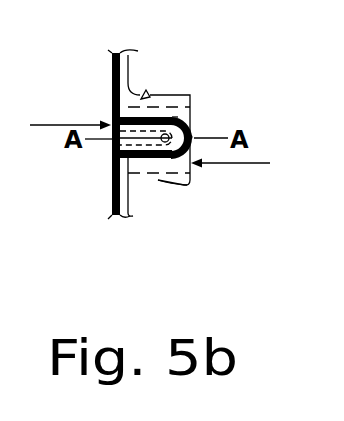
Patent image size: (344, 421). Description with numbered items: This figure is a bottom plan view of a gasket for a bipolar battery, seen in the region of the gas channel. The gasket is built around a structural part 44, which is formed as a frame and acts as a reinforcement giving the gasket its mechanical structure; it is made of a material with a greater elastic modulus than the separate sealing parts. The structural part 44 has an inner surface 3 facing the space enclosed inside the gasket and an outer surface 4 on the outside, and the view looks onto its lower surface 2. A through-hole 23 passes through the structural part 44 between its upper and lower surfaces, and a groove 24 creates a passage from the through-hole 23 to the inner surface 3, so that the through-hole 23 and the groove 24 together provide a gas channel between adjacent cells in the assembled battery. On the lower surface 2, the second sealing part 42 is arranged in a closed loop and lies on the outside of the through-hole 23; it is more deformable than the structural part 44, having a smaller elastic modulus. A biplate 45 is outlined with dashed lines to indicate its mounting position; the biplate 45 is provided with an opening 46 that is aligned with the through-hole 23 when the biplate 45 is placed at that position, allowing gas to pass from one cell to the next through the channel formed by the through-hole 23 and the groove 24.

The lower surface 2 is at (191, 88).
The inner surface 3 is at (60, 125).
The outer surface 4 is at (239, 167).
The through-hole 23 is at (190, 136).
The groove 24 is at (113, 144).
The second sealing part 42 is at (112, 110).
The structural part 44 is at (130, 215).
The biplate 45 is at (148, 91).
The opening 46 is at (185, 122).